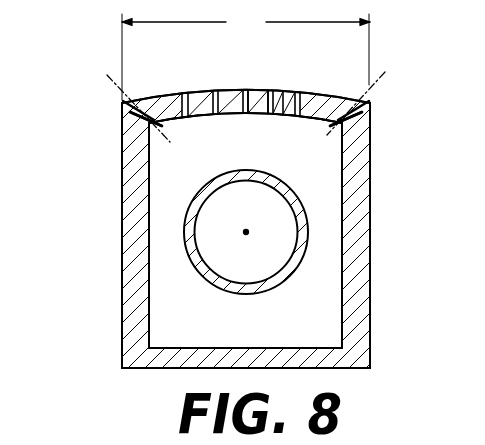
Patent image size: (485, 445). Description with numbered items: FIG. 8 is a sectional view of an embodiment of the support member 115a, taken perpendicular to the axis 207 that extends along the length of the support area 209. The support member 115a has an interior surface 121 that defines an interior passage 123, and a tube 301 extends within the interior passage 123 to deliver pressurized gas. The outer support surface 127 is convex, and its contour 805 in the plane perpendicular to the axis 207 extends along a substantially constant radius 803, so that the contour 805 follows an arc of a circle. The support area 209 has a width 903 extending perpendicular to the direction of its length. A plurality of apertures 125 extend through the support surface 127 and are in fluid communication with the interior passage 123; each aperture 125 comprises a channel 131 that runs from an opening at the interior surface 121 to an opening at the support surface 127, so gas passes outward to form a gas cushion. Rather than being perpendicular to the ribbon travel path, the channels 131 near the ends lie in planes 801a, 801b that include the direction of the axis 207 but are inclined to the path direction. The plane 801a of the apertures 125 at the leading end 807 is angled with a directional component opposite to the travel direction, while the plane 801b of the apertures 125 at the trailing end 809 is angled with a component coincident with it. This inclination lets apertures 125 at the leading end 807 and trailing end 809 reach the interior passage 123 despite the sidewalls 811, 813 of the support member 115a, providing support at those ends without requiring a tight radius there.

The width 903 is at (246, 53).
The plane 801a is at (110, 86).
The plane 801b is at (424, 87).
The leading end 807 is at (128, 117).
The trailing end 809 is at (367, 103).
The aperture 125 is at (188, 98).
The support surface 127 is at (238, 91).
The contour 805 is at (256, 88).
The support area 209 is at (287, 90).
The radius 803 is at (258, 97).
The channel 131 is at (123, 127).
The sidewall 811 is at (123, 278).
The sidewall 813 is at (371, 208).
The interior passage 123 is at (326, 313).
The interior surface 121 is at (291, 341).
The support member 115a is at (158, 375).
The tube 301 is at (185, 267).
The axis 207 is at (246, 235).